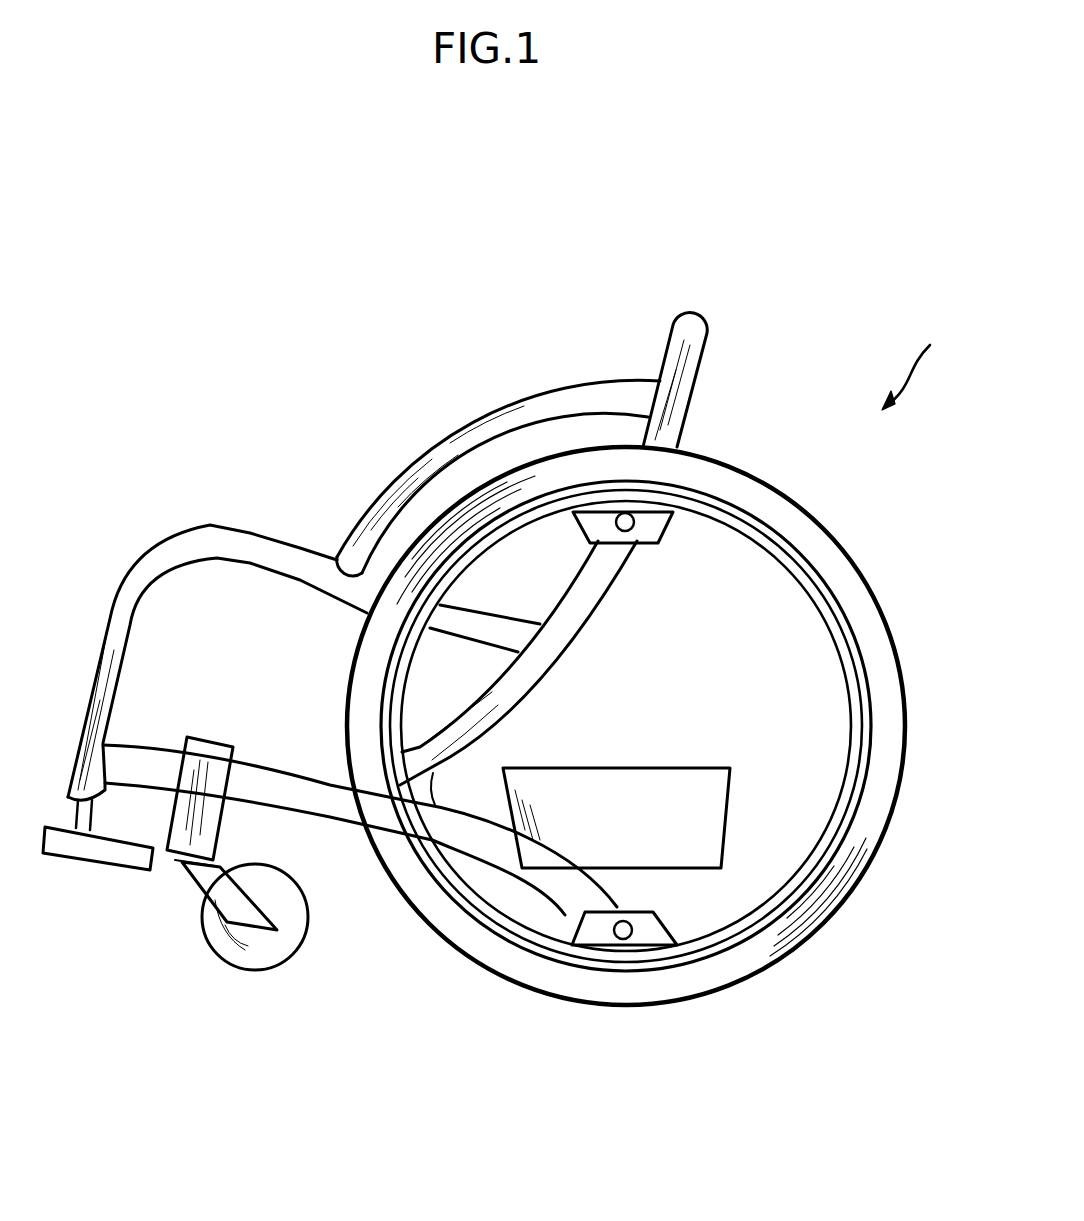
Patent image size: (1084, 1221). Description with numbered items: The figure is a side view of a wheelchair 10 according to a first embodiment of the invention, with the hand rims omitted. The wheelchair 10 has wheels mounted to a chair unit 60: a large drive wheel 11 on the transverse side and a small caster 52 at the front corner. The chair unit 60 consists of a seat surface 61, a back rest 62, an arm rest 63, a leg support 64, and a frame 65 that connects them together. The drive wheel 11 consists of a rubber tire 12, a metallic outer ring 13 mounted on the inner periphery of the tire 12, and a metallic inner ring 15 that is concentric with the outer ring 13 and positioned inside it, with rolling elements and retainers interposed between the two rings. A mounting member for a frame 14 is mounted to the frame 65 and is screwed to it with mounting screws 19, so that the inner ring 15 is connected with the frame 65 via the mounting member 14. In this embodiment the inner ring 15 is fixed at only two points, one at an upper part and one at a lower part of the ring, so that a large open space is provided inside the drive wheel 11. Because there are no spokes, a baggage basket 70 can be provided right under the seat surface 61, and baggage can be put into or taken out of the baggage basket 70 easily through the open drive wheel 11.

The wheelchair 10 is at (952, 333).
The drive wheel 11 is at (647, 717).
The rubber tire 12 is at (860, 580).
The outer ring 13 is at (758, 520).
The mounting member for a frame 14 is at (650, 532).
The inner ring 15 is at (770, 548).
The mounting screws 19 is at (621, 942).
The casters 52 is at (252, 963).
The chair unit 60 is at (232, 530).
The seat surface 61 is at (472, 610).
The back rest 62 is at (690, 380).
The arm rests 63 is at (456, 433).
The leg supports 64 is at (100, 857).
The frame 65 is at (523, 857).
The baggage basket 70 is at (690, 775).